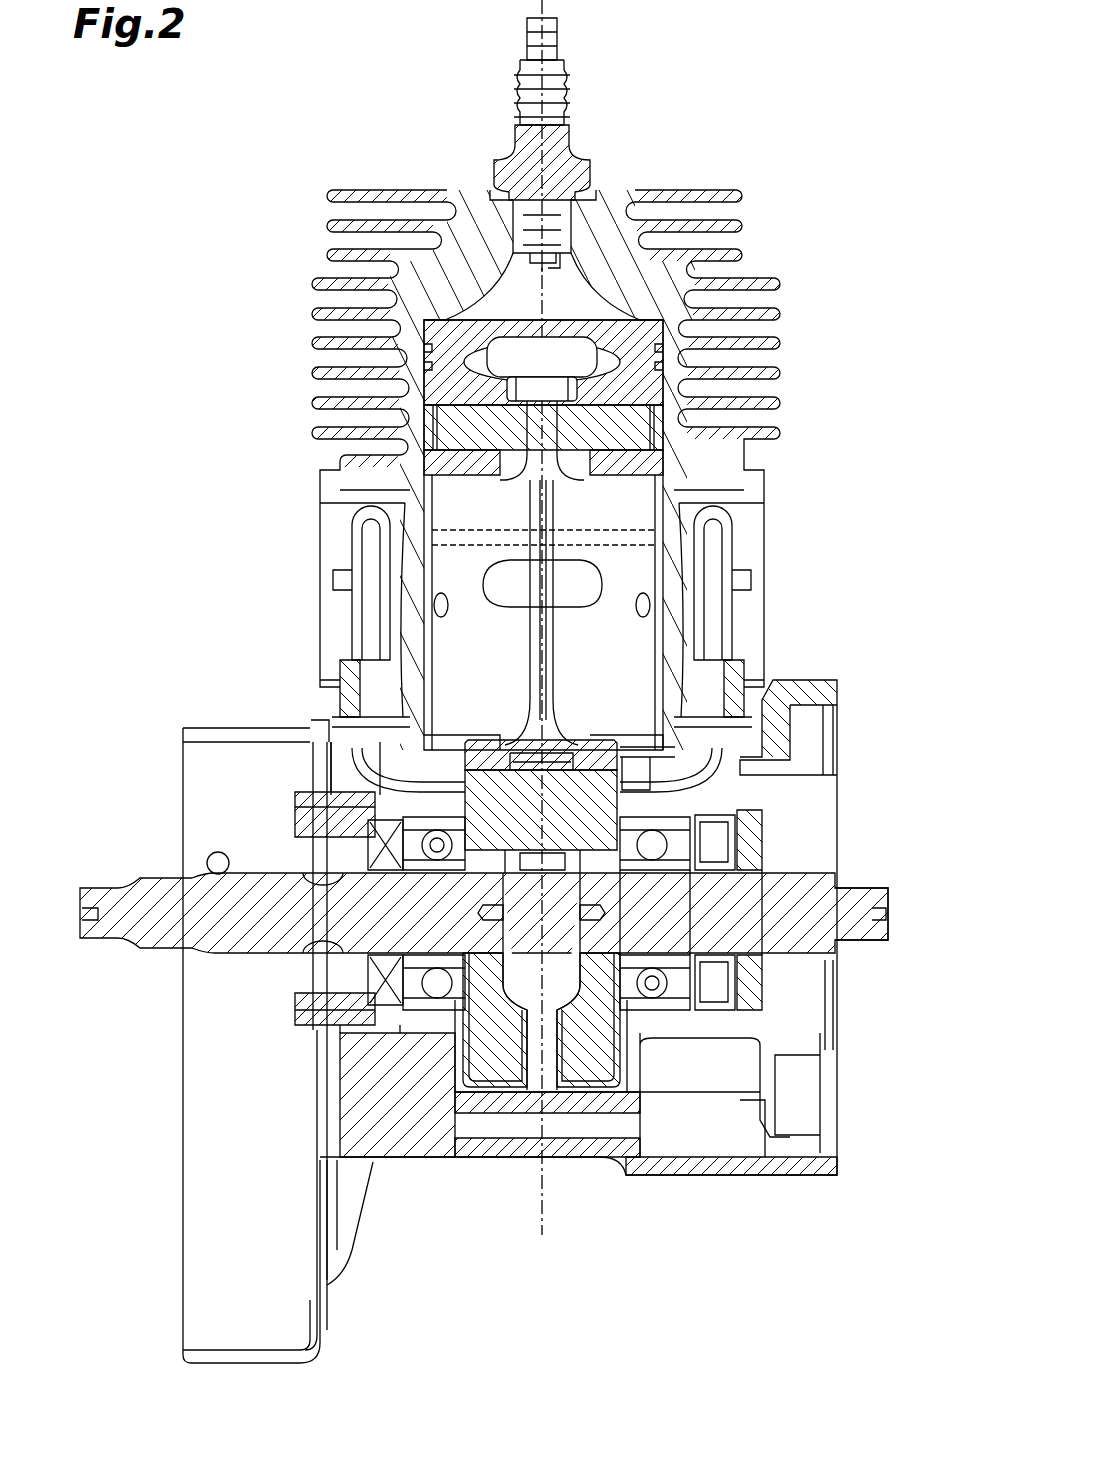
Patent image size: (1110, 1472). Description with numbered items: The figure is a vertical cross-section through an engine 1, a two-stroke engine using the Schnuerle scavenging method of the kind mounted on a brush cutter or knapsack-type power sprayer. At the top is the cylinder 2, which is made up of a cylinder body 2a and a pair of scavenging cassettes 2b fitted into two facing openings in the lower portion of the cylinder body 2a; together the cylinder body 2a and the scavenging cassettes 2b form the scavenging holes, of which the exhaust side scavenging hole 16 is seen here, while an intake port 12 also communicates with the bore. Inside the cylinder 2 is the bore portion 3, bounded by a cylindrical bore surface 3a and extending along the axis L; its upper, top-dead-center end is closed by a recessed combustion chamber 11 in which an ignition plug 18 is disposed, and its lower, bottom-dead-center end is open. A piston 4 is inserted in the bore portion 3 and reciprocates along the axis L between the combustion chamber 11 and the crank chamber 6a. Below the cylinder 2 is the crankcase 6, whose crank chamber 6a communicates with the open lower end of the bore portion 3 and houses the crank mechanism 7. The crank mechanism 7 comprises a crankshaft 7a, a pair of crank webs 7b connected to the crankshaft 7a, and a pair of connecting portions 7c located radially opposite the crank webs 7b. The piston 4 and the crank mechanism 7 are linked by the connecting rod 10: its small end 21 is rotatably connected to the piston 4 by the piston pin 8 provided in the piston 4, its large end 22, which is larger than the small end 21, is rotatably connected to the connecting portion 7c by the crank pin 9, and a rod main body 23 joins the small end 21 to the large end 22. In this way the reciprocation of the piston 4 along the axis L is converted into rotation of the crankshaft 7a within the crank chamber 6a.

The engine 1 is at (840, 97).
The cylinder 2 is at (547, 418).
The cylinder body 2a is at (785, 275).
The scavenging cassette 2b is at (325, 540).
The bore portion 3 is at (558, 535).
The bore surface 3a is at (650, 686).
The piston 4 is at (470, 318).
The crankcase 6 is at (412, 1162).
The crank chamber 6a is at (610, 1047).
The crank mechanism 7 is at (517, 983).
The crankshaft 7a is at (838, 932).
The crank web 7b is at (496, 1130).
The connecting portion 7c is at (650, 772).
The piston pin 8 is at (440, 410).
The crank pin 9 is at (490, 800).
The connecting rod 10 is at (522, 622).
The combustion chamber 11 is at (490, 268).
The intake port 12 is at (500, 580).
The exhaust side scavenging hole 16 is at (378, 548).
The ignition plug 18 is at (522, 180).
The small end 21 is at (592, 380).
The large end 22 is at (512, 735).
The rod main body 23 is at (690, 583).
The axis L is at (545, 1220).